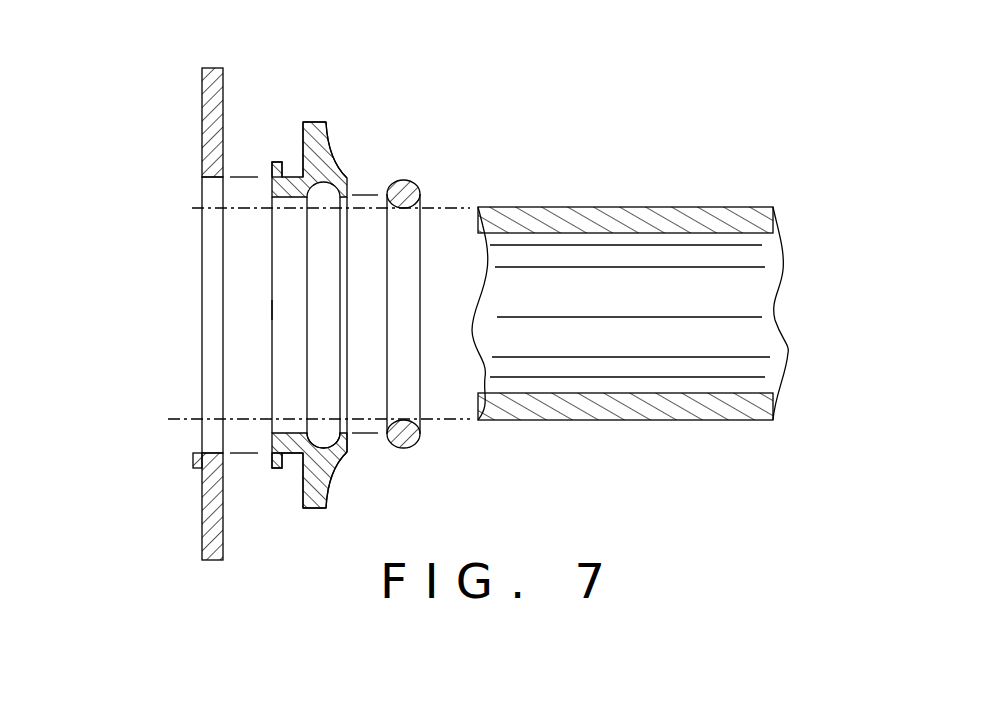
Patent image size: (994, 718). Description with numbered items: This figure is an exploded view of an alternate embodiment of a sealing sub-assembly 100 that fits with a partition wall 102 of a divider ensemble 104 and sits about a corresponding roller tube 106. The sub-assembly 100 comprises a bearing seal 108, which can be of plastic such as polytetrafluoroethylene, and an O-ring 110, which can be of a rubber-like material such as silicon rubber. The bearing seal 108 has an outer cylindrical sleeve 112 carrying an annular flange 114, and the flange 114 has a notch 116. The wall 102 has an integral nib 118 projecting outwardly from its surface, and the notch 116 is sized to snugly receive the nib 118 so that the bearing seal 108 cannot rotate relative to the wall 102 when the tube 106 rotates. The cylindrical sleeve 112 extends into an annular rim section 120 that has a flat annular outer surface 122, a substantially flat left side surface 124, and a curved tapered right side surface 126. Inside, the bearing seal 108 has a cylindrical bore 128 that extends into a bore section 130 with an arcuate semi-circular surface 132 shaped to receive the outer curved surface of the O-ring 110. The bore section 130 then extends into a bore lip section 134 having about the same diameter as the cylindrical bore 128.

The sealing sub-assembly 100 is at (332, 76).
The partition wall 102 is at (170, 564).
The divider ensemble 104 is at (630, 320).
The roller tube 106 is at (675, 184).
The bearing seal 108 is at (348, 495).
The O-ring 110 is at (417, 164).
The outer cylindrical sleeve 112 is at (270, 175).
The annular flange 114 is at (277, 160).
The notch 116 is at (272, 458).
The nib 118 is at (193, 456).
The annular rim section 120 is at (283, 490).
The flat annular outer surface 122 is at (318, 122).
The left side surface 124 is at (302, 138).
The right side surface 126 is at (328, 150).
The cylindrical bore 128 is at (288, 310).
The bore section 130 is at (320, 395).
The arcuate semi-circular surface 132 is at (330, 447).
The bore lip section 134 is at (348, 432).